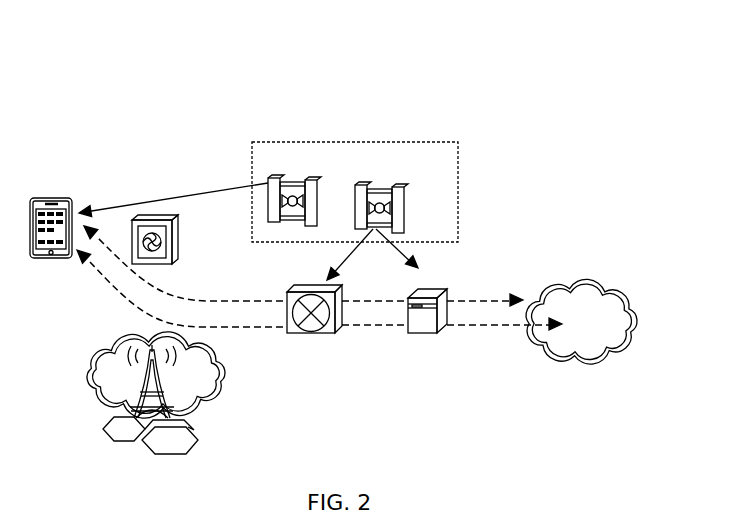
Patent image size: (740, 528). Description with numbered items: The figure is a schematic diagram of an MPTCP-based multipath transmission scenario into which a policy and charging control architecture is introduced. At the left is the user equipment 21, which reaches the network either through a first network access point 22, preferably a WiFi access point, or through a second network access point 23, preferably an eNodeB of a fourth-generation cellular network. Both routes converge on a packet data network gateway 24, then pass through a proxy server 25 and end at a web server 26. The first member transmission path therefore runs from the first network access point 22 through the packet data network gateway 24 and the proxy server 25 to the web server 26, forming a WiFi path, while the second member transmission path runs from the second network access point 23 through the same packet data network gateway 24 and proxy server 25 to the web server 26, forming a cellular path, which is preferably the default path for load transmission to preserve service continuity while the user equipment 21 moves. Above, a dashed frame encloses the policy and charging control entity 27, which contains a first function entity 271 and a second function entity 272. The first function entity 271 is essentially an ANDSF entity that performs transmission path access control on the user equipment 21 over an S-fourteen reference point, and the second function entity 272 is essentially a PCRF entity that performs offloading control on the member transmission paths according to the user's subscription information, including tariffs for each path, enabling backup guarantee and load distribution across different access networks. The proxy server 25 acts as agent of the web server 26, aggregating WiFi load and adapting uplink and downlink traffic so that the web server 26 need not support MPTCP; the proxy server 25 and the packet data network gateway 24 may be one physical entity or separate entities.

The user equipment 21 is at (52, 198).
The first network access point 22 is at (176, 233).
The second network access point 23 is at (156, 393).
The packet data network gateway 24 is at (310, 333).
The proxy server 25 is at (428, 333).
The web server 26 is at (581, 321).
The policy and charging control entity 27 is at (355, 192).
The first function entity 271 is at (290, 177).
The second function entity 272 is at (381, 184).